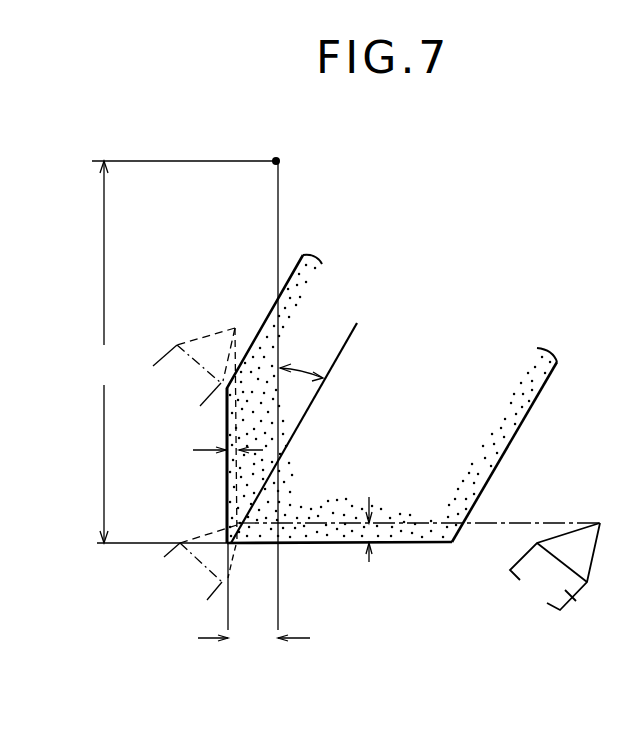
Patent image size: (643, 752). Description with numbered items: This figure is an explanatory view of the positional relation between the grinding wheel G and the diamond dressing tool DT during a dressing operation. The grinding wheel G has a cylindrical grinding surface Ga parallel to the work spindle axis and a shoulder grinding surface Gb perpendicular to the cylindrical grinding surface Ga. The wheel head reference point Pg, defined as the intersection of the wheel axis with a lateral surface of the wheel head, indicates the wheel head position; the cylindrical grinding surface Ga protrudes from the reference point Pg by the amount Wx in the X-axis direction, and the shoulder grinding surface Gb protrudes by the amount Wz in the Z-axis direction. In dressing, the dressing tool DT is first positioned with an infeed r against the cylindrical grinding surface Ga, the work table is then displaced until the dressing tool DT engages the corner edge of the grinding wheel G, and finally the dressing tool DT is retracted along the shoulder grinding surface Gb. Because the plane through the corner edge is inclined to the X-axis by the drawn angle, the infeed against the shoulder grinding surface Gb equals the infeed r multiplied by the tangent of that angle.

The grinding wheel G is at (538, 380).
The cylindrical grinding surface Ga is at (432, 544).
The shoulder grinding surface Gb is at (226, 497).
The wheel head reference point Pg is at (276, 160).
The diamond dressing tool DT is at (577, 600).
The infeed r is at (418, 516).
The protruding amount in the X-axis direction Wx is at (157, 352).
The protruding amount in the Z-axis direction Wz is at (254, 597).